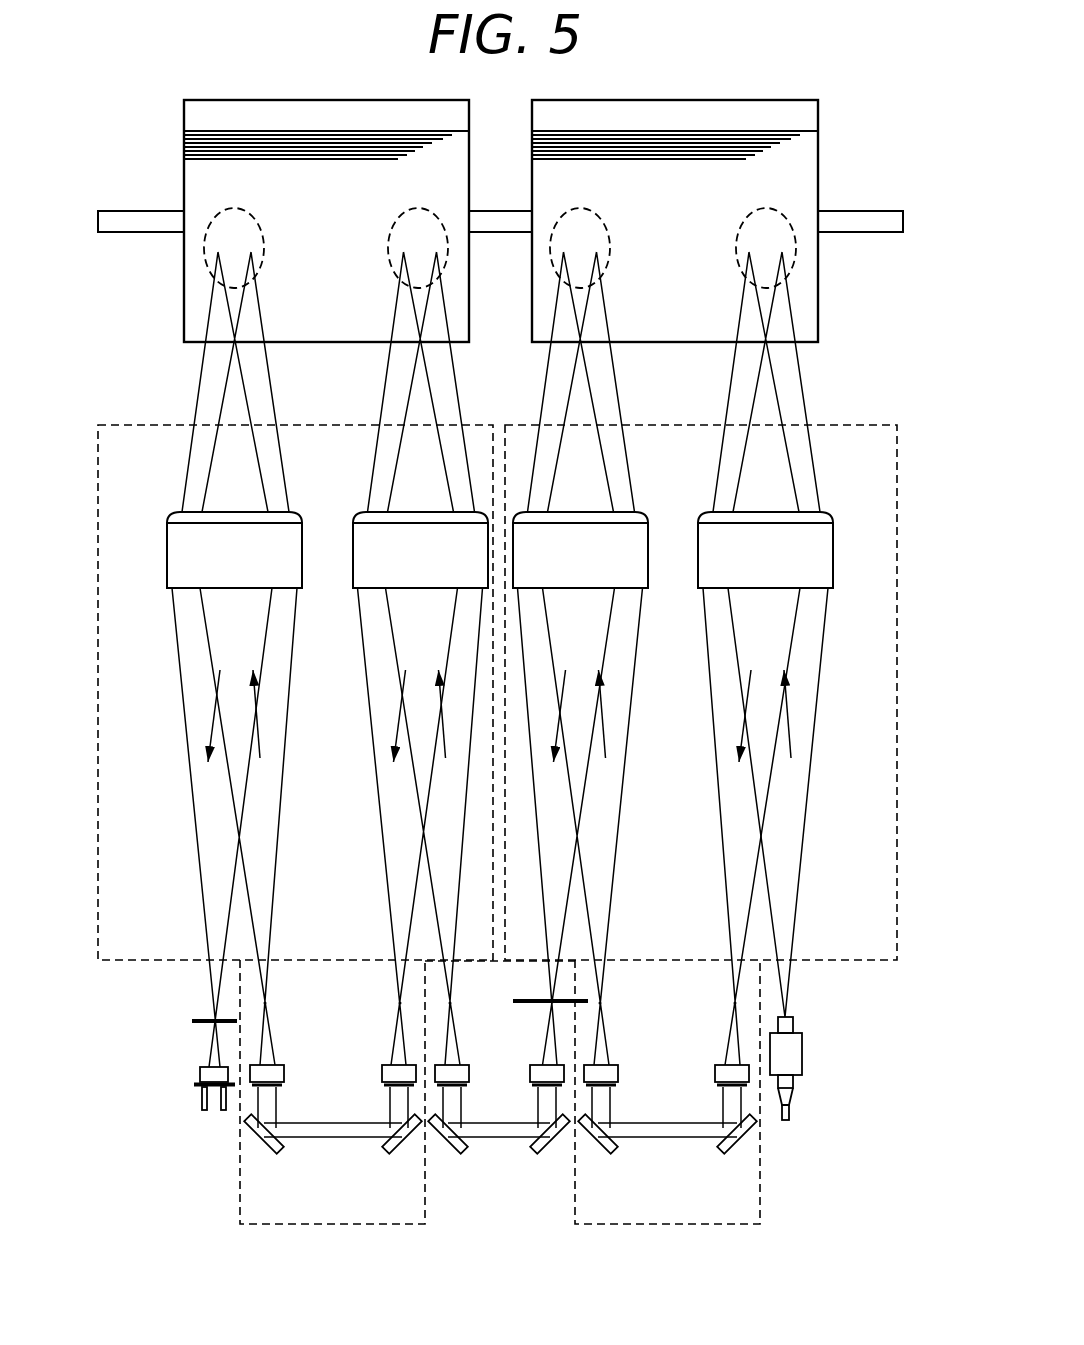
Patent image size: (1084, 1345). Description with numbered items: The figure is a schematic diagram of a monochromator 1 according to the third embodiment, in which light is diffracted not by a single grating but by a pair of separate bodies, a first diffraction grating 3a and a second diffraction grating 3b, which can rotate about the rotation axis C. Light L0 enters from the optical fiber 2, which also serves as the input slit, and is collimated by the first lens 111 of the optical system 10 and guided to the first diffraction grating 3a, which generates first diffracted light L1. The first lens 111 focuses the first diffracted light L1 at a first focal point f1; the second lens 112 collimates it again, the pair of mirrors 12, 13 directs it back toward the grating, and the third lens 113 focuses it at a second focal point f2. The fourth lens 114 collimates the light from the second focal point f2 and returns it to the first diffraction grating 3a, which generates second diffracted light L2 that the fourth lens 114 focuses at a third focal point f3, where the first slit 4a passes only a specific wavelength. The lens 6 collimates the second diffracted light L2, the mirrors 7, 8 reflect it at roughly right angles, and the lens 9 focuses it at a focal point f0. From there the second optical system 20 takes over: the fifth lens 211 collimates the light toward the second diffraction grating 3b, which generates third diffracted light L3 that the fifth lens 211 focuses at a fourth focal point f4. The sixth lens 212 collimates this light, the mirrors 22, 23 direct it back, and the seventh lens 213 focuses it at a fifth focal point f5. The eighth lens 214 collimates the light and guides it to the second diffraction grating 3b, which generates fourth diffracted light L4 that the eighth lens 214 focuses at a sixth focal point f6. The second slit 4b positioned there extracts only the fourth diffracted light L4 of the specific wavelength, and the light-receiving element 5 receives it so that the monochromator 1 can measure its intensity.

The monochromator 1 is at (514, 1311).
The optical fiber 2 is at (802, 1057).
The first diffraction grating 3a is at (700, 100).
The second diffraction grating 3b is at (300, 100).
The first slit 4a is at (552, 1002).
The second slit 4b is at (198, 1023).
The light-receiving element 5 is at (200, 1073).
The lens 6 is at (530, 1073).
The mirror 7 is at (553, 1143).
The mirror 8 is at (446, 1143).
The lens 9 is at (470, 1075).
The optical system 10 is at (845, 425).
The mirror 12 is at (719, 1148).
The mirror 13 is at (593, 1143).
The second optical system 20 is at (153, 425).
The mirror 22 is at (385, 1148).
The mirror 23 is at (253, 1143).
The first lens 111 is at (833, 567).
The second lens 112 is at (715, 1072).
The third lens 113 is at (618, 1070).
The fourth lens 114 is at (648, 539).
The fifth lens 211 is at (353, 548).
The sixth lens 212 is at (382, 1072).
The seventh lens 213 is at (285, 1072).
The eighth lens 214 is at (167, 557).
The rotation axis C is at (866, 223).
The light L0 is at (803, 842).
The first diffracted light L1 is at (732, 373).
The second diffracted light L2 is at (547, 372).
The third diffracted light L3 is at (386, 382).
The fourth diffracted light L4 is at (203, 362).
The focal point f0 is at (451, 1002).
The first focal point f1 is at (735, 1002).
The second focal point f2 is at (600, 1002).
The third focal point f3 is at (550, 1001).
The fourth focal point f4 is at (400, 1003).
The fifth focal point f5 is at (264, 1003).
The sixth focal point f6 is at (213, 1021).